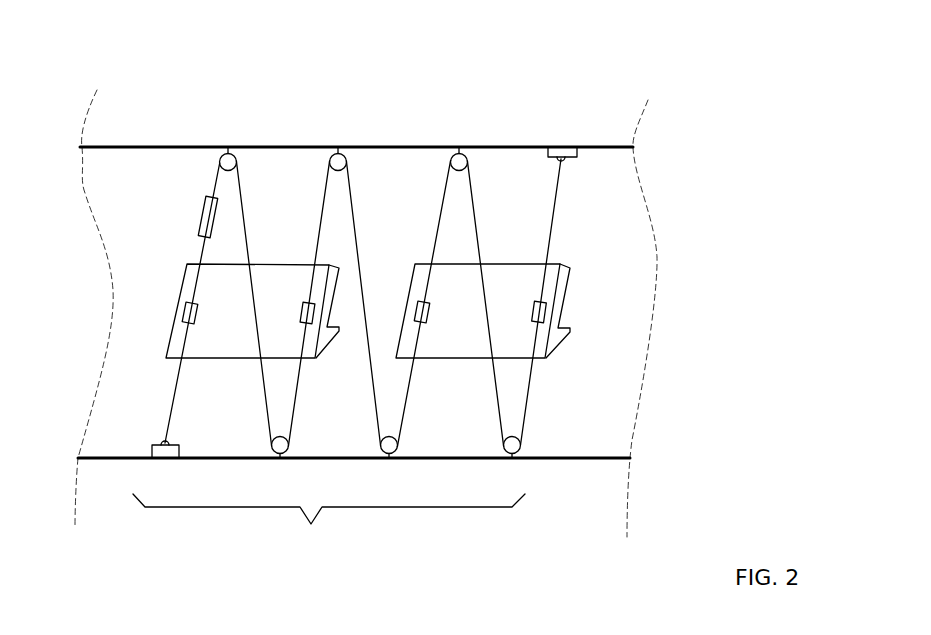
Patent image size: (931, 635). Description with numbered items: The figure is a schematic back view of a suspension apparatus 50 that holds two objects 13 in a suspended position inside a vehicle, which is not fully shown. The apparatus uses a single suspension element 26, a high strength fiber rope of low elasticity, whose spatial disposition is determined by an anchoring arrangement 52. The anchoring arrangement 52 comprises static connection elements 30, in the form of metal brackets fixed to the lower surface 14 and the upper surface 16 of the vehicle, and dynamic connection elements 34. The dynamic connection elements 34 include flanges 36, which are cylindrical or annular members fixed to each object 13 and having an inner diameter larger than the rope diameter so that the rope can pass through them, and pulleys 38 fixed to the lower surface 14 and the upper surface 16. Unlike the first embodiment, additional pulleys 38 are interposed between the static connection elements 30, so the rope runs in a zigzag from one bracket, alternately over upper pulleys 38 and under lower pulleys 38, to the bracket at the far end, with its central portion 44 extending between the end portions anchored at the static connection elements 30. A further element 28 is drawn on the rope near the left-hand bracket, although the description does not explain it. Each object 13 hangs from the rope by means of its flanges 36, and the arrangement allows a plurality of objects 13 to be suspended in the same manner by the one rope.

The object 13 is at (265, 264).
The lower surface 14 is at (577, 458).
The upper surface 16 is at (492, 147).
The suspension element 26 is at (356, 216).
The tensioner / turnbuckle 28 is at (203, 212).
The static connection elements 30 is at (152, 452).
The dynamic connection elements 34 is at (394, 462).
The flanges 36 is at (186, 310).
The pulleys 38 is at (220, 164).
The central portion 44 is at (199, 256).
The suspension apparatus 50 is at (526, 126).
The anchoring arrangement 52 is at (329, 523).